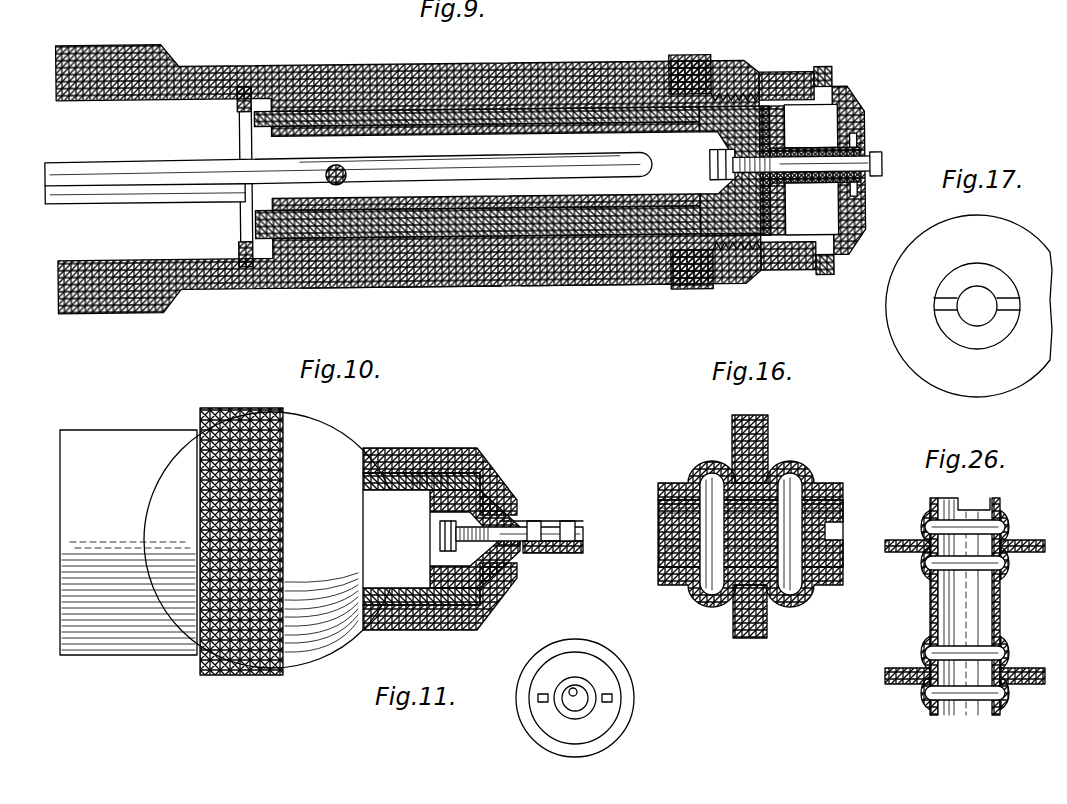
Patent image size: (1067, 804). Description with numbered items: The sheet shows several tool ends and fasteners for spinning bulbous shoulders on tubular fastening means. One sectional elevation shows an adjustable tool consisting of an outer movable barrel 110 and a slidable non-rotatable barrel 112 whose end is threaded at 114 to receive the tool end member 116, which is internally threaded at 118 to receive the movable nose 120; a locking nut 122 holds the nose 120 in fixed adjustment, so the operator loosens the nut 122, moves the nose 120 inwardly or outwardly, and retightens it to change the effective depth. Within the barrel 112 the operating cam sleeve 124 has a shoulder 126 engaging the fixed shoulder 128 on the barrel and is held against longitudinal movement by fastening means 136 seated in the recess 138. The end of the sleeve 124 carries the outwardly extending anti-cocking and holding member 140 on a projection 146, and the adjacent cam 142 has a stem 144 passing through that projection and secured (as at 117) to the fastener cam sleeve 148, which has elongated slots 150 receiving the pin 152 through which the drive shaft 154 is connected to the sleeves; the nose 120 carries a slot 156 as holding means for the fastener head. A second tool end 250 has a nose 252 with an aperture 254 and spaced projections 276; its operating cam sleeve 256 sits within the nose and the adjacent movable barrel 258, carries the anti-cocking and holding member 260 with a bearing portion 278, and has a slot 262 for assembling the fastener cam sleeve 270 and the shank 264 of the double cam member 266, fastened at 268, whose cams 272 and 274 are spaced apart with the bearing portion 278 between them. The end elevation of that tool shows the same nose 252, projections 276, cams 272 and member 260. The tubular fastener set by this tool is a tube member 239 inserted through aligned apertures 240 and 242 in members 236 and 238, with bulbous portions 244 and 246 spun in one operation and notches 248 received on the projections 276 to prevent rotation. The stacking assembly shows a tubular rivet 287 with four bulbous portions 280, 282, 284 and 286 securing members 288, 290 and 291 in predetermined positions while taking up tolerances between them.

In FIG. 9, the outer movable barrel 110 is at (100, 306).
In FIG. 9, the slidable non-rotatable barrel 112 is at (440, 286).
In FIG. 9, the threads 114 is at (628, 287).
In FIG. 9, the tool end member 116 is at (725, 57).
In FIG. 9, the nut 117 is at (708, 162).
In FIG. 9, the internal threads 118 is at (760, 97).
In FIG. 9, the movable nose 120 is at (848, 92).
In FIG. 9, the locking member or nut 122 is at (820, 70).
In FIG. 9, the operating cam sleeve 124 is at (522, 108).
In FIG. 9, the shoulder 126 is at (257, 94).
In FIG. 9, the fixed shoulder 128 is at (293, 106).
In FIG. 9, the fastening means 136 is at (225, 262).
In FIG. 9, the recess 138 is at (245, 270).
In FIG. 9, the anti-cocking and holding member 140 is at (868, 192).
In FIG. 9, the cam 142 is at (874, 160).
In FIG. 9, the stem 144 is at (872, 152).
In FIG. 9, the projection 146 is at (811, 169).
In FIG. 9, the fastener cam sleeve 148 is at (600, 135).
In FIG. 9, the elongated slots 150 is at (452, 160).
In FIG. 9, the pin 152 is at (335, 185).
In FIG. 9, the drive shaft 154 is at (133, 200).
In FIG. 9, the slot 156 is at (864, 234).
In FIG. 10, the tool end 250 is at (333, 440).
In FIG. 11, the tool end 250 is at (616, 673).
In FIG. 10, the nose 252 is at (490, 480).
In FIG. 11, the nose 252 is at (605, 668).
In FIG. 10, the aperture 254 is at (505, 500).
In FIG. 10, the operating cam sleeve 256 is at (392, 463).
In FIG. 10, the movable barrel 258 is at (88, 436).
In FIG. 10, the anti-cocking and holding member 260 is at (580, 547).
In FIG. 11, the anti-cocking and holding member 260 is at (562, 705).
In FIG. 10, the slot 262 is at (462, 474).
In FIG. 10, the shank 264 is at (535, 524).
In FIG. 11, the shank 264 is at (577, 685).
In FIG. 10, the double cam member 266 is at (560, 521).
In FIG. 10, the fastening 268 is at (400, 622).
In FIG. 10, the fastener cam sleeve 270 is at (390, 562).
In FIG. 10, the cam 272 is at (575, 538).
In FIG. 11, the cam 272 is at (565, 693).
In FIG. 10, the cam 274 is at (525, 548).
In FIG. 10, the spaced projections 276 is at (506, 582).
In FIG. 11, the spaced projections 276 is at (612, 698).
In FIG. 10, the bearing portion 278 is at (545, 553).
In FIG. 16, the member 236 is at (728, 431).
In FIG. 16, the member 238 is at (769, 430).
In FIG. 16, the tube member 239 is at (820, 586).
In FIG. 16, the aperture 240 is at (726, 458).
In FIG. 16, the aperture 242 is at (770, 465).
In FIG. 16, the bulbous portion 244 is at (700, 600).
In FIG. 16, the bulbous portion 246 is at (788, 605).
In FIG. 16, the notches 248 is at (831, 505).
In FIG. 17, the notches 248 is at (1010, 300).
In FIG. 26, the bulbous portion 280 is at (1000, 513).
In FIG. 26, the bulbous portion 282 is at (1008, 562).
In FIG. 26, the bulbous portion 284 is at (1008, 653).
In FIG. 26, the bulbous portion 286 is at (1010, 702).
In FIG. 26, the tubular member or rivet 287 is at (932, 610).
In FIG. 26, the member 288 is at (1030, 540).
In FIG. 26, the member 290 is at (898, 670).
In FIG. 26, the member 291 is at (890, 690).